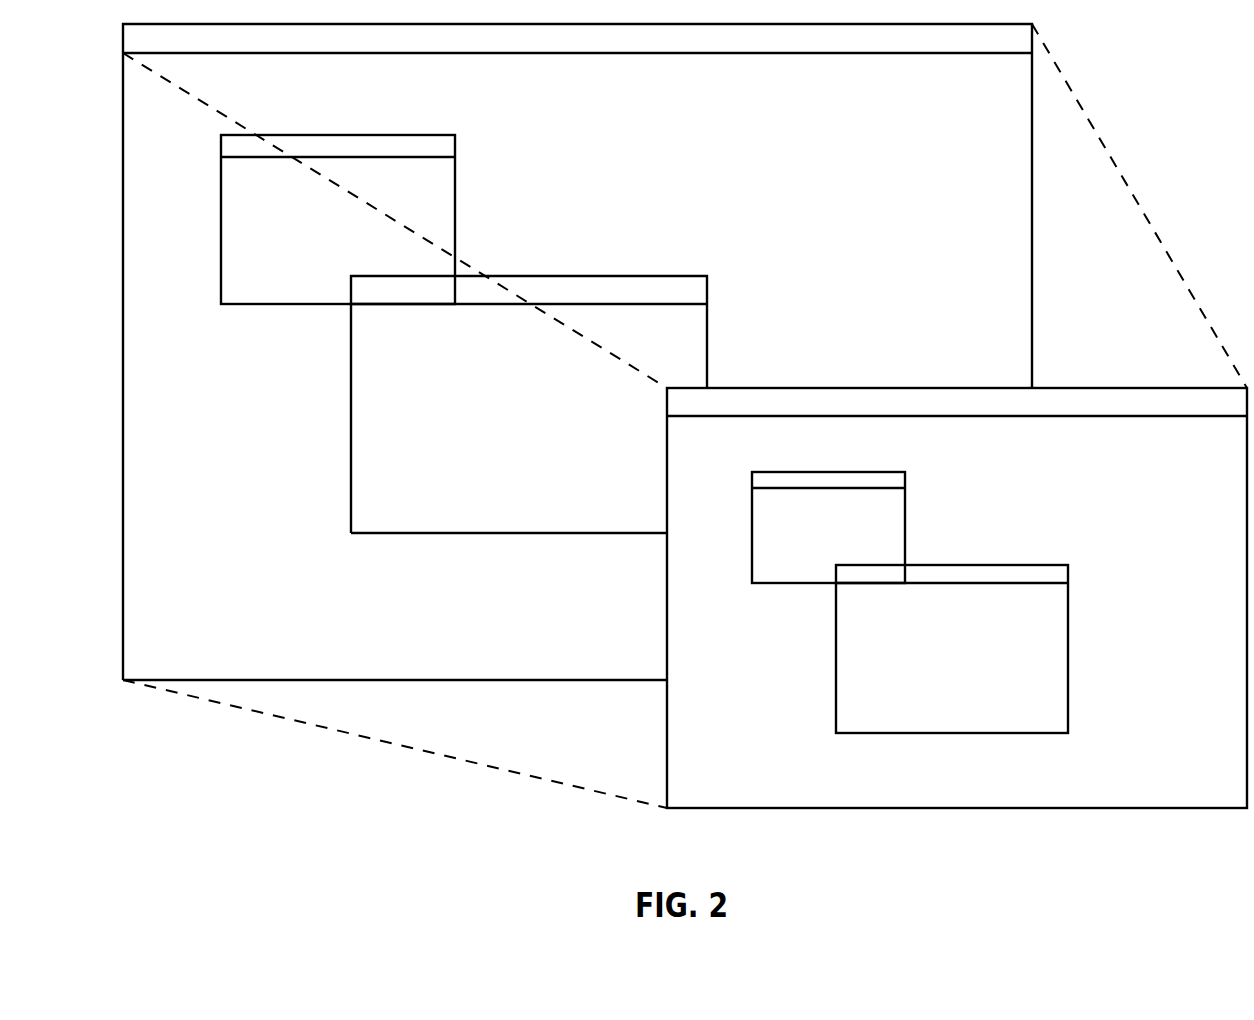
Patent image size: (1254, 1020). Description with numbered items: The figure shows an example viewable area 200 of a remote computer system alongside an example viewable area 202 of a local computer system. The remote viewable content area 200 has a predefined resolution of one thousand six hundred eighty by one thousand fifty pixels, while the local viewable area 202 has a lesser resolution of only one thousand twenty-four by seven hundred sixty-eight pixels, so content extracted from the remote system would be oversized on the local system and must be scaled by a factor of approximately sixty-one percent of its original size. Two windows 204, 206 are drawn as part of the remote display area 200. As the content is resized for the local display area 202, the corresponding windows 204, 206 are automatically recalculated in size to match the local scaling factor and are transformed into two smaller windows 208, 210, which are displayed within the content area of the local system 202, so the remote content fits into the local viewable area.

The viewable area of remote computer system 200 is at (685, 416).
The viewable area of local computer system 202 is at (957, 598).
The window 204 is at (305, 304).
The window 206 is at (445, 533).
The smaller window 208 is at (808, 583).
The smaller window 210 is at (836, 700).